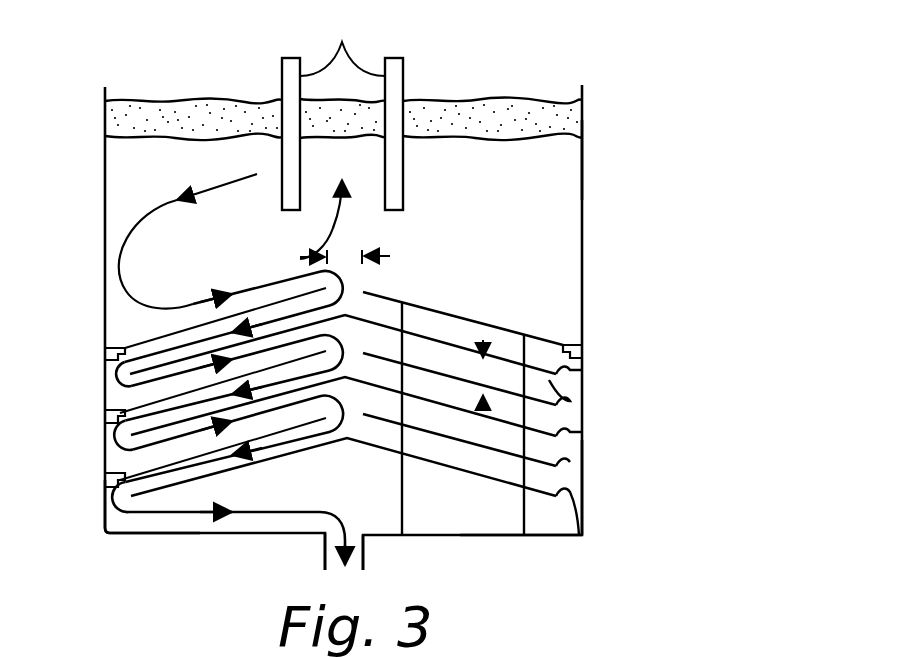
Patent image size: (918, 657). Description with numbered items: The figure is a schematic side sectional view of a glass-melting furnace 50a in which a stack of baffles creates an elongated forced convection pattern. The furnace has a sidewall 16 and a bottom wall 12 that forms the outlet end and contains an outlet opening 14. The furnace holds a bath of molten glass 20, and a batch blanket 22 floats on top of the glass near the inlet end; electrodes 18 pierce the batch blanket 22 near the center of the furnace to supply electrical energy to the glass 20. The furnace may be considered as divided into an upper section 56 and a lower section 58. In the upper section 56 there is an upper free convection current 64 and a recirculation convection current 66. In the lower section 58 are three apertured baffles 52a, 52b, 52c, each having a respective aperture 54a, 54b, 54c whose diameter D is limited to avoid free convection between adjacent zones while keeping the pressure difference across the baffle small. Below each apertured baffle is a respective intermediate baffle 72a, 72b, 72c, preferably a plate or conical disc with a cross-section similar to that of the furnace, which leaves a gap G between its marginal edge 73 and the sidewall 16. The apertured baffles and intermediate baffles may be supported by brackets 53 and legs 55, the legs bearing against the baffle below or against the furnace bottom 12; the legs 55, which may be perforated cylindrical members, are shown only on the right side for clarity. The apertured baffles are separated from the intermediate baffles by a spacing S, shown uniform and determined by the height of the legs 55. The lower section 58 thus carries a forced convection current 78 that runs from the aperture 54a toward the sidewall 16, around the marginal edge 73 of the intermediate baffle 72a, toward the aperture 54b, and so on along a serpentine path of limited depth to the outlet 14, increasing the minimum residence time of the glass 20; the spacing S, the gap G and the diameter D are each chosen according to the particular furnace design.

The furnace 50a is at (525, 76).
The upper section 56 is at (596, 160).
The sidewall 16 is at (105, 518).
The outlet opening 14 is at (363, 548).
The bottom wall 12 is at (510, 540).
The molten glass 20 is at (512, 180).
The batch blanket 22 is at (191, 113).
The electrodes 18 is at (342, 108).
The upper free convection current 64 is at (217, 183).
The recirculation convection current 66 is at (325, 218).
The diameter D is at (345, 259).
The aperture 54a is at (355, 292).
The aperture 54b is at (355, 357).
The aperture 54c is at (350, 445).
The gap G is at (116, 392).
The forced convection current 78 is at (114, 376).
The marginal edge 73 is at (125, 371).
The apertured baffle 52a is at (540, 338).
The apertured baffle 52b is at (565, 406).
The apertured baffle 52c is at (565, 455).
The intermediate baffle 72a is at (575, 366).
The intermediate baffle 72b is at (575, 434).
The intermediate baffle 72c is at (582, 535).
The bracket 53 is at (590, 345).
The legs 55 is at (402, 410).
The spacing S is at (482, 375).
The lower section 58 is at (628, 480).